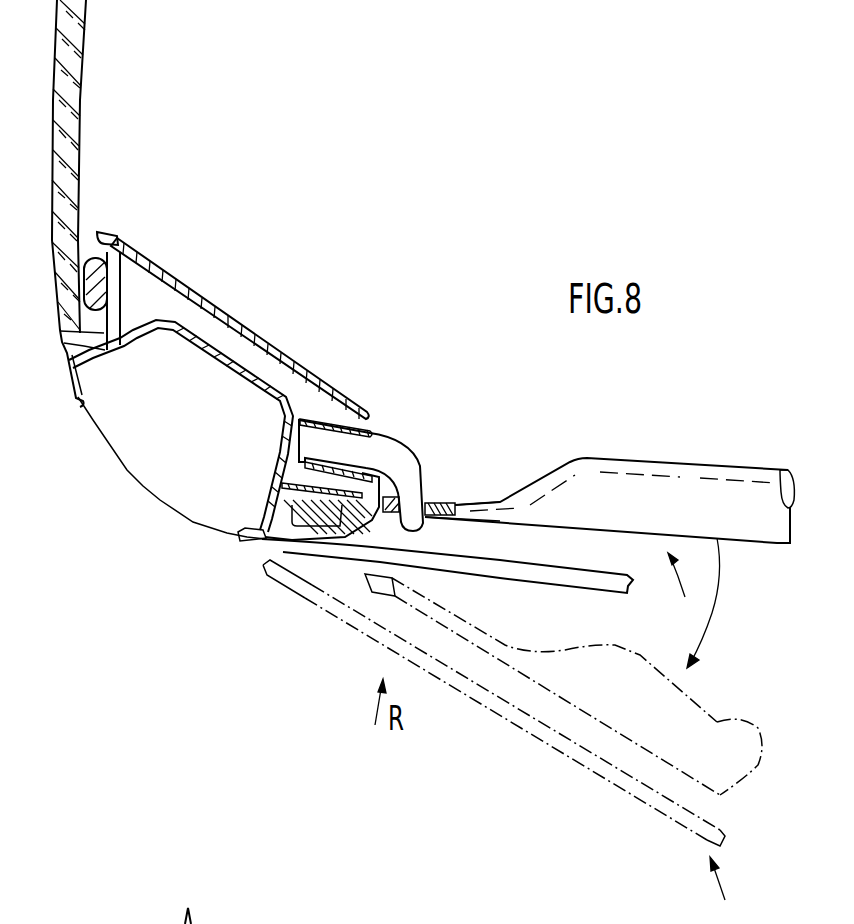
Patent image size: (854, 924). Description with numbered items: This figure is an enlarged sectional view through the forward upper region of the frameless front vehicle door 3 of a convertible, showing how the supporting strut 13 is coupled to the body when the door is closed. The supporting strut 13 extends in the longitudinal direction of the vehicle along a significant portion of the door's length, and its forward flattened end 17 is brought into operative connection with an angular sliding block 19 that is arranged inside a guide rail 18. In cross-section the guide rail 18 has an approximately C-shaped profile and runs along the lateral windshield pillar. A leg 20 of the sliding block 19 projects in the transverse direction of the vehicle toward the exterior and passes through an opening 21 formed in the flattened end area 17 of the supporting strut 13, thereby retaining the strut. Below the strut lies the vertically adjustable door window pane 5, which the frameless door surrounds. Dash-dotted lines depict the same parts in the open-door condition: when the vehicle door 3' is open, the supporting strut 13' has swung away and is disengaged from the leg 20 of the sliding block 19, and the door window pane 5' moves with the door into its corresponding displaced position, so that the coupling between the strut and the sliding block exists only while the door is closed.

The front vehicle door 3 is at (694, 603).
The vehicle door in open position 3' is at (721, 890).
The door window pane 5 is at (447, 561).
The door window pane in open-door position 5' is at (494, 703).
The supporting strut 13 is at (609, 456).
The supporting strut in open-door position 13' is at (581, 684).
The flattened end 17 is at (437, 484).
The guide rail 18 is at (330, 418).
The sliding block 19 is at (400, 452).
The leg 20 is at (410, 515).
The opening 21 is at (428, 518).